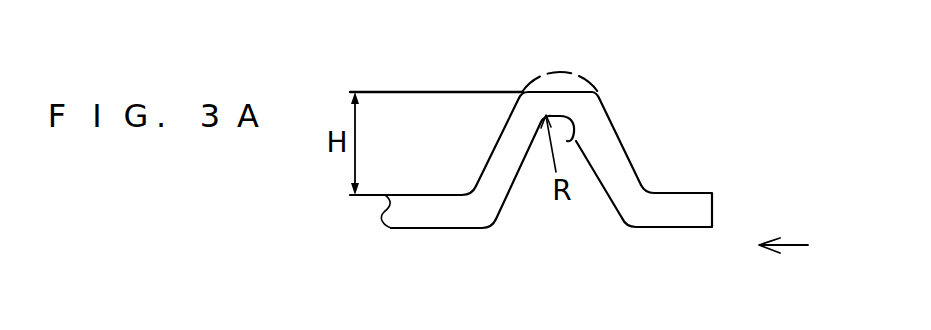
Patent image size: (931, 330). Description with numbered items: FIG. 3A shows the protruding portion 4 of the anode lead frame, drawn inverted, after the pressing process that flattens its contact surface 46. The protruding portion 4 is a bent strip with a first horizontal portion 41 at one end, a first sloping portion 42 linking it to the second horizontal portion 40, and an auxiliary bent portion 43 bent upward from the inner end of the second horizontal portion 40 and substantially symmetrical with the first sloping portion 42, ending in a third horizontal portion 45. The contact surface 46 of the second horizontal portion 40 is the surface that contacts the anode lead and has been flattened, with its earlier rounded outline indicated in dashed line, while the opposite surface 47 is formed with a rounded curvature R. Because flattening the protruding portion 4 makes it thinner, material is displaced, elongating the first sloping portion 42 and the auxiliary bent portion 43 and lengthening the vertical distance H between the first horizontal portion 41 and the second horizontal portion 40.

The protruding portion 4 is at (833, 263).
The second horizontal portion 40 is at (572, 104).
The first horizontal portion 41 is at (440, 220).
The first sloping portion 42 is at (498, 192).
The auxiliary bent portion 43 is at (634, 165).
The third horizontal portion 45 is at (657, 218).
The contact surface 46 is at (552, 92).
The surface 47 is at (567, 141).